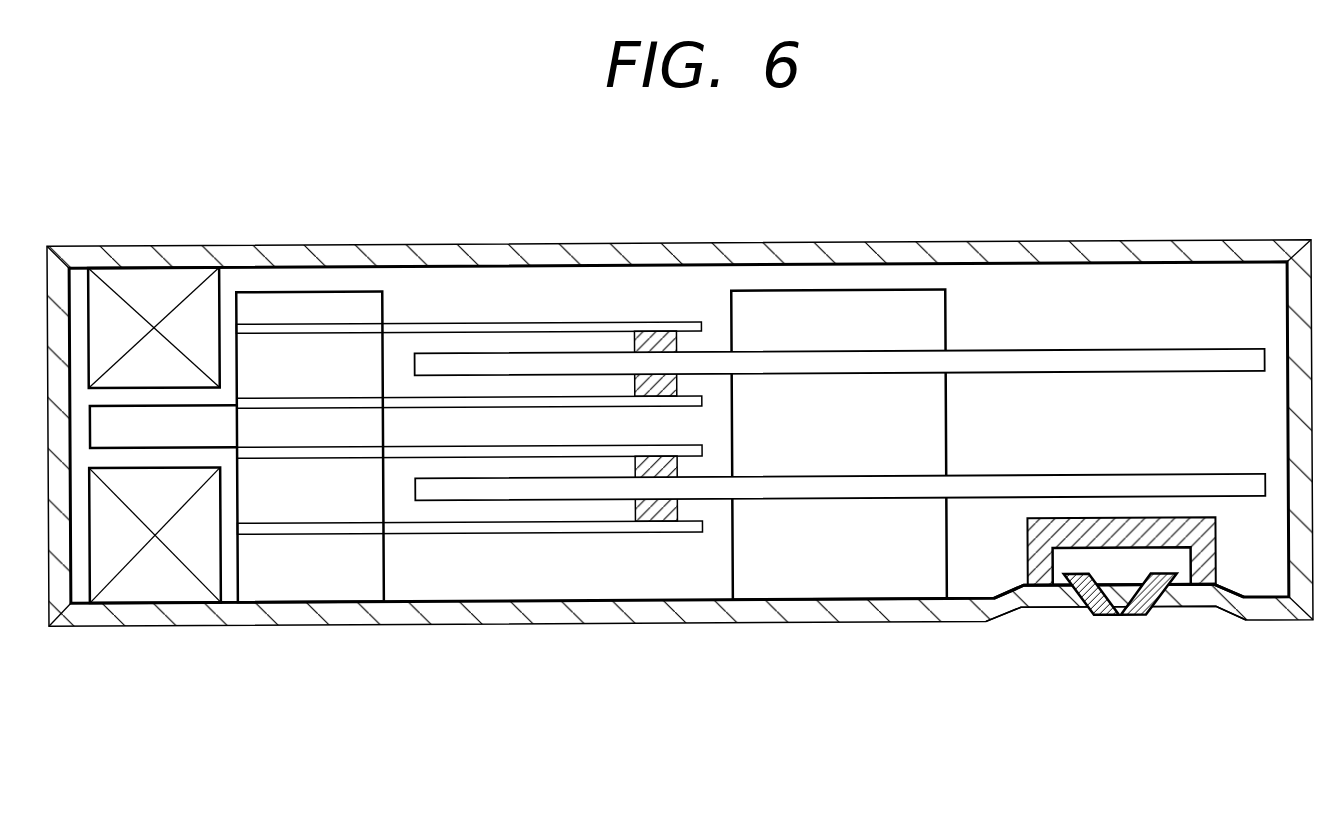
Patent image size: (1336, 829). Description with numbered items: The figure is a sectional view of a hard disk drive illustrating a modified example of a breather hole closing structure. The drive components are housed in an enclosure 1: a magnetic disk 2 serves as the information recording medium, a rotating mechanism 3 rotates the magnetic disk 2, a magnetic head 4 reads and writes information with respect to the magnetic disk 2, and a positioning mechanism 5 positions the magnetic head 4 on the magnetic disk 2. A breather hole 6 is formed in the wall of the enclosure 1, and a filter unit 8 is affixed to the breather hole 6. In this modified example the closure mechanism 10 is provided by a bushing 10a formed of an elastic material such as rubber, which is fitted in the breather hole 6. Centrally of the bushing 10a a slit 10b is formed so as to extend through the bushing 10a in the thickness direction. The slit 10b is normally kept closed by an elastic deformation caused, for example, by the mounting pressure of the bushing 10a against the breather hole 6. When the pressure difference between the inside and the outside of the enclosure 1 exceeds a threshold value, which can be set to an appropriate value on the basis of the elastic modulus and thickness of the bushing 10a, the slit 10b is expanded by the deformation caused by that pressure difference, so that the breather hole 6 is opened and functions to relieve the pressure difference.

The enclosure 1 is at (736, 253).
The magnetic disk 2 is at (1113, 362).
The rotating mechanism 3 is at (857, 570).
The magnetic head 4 is at (655, 335).
The positioning mechanism 5 is at (296, 343).
The breather hole 6 is at (1176, 598).
The filter unit 8 is at (1099, 534).
The closure mechanism 10 is at (1123, 663).
The bushing 10a is at (1096, 597).
The slit 10b is at (1140, 597).